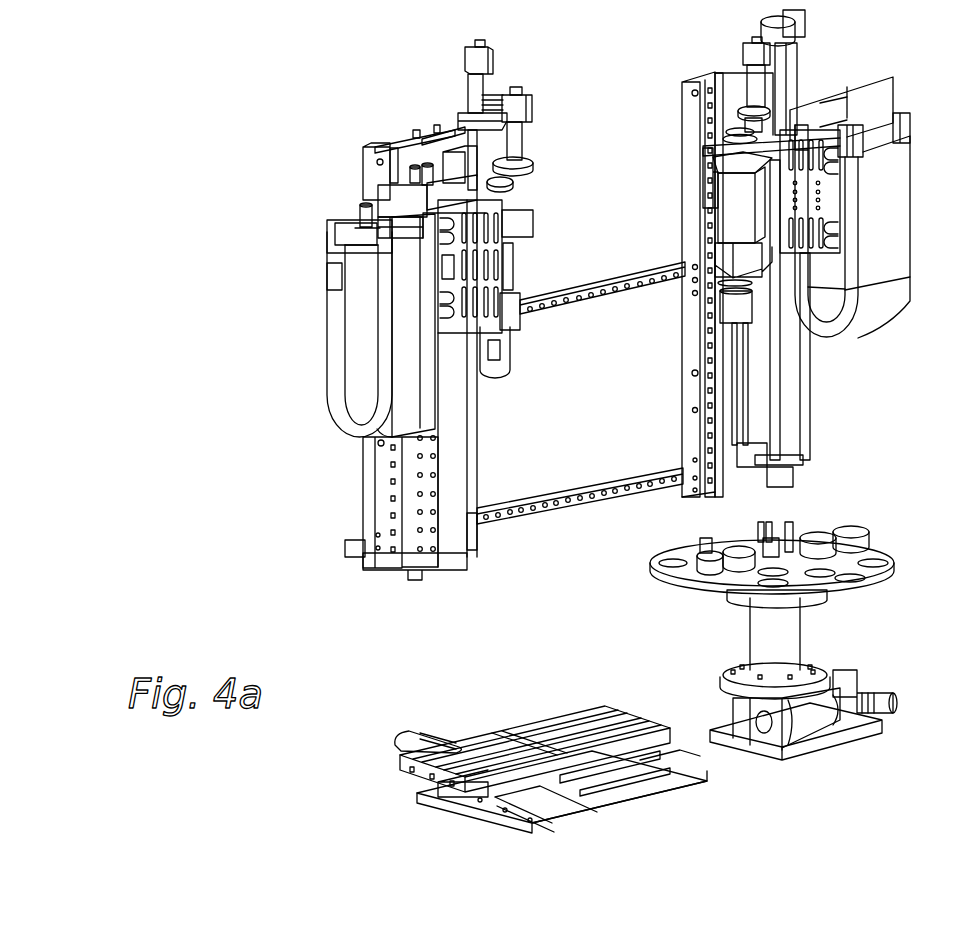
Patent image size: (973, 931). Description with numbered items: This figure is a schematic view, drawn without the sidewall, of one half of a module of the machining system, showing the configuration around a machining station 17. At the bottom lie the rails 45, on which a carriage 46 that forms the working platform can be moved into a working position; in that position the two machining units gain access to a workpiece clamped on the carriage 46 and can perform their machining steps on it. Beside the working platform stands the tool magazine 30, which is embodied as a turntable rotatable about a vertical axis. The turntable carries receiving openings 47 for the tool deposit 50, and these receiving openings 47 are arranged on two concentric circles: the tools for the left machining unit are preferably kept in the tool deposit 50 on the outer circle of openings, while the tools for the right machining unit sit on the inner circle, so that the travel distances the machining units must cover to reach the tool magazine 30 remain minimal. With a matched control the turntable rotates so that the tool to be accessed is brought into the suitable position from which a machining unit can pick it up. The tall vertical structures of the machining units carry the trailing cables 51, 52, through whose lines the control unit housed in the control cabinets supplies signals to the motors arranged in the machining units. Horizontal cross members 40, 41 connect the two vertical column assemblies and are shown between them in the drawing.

The machining station 17 is at (557, 767).
The tool magazine 30 is at (874, 549).
The upper cross beam 40 is at (596, 283).
The lower cross beam 41 is at (588, 492).
The rails 45 is at (680, 771).
The carriage 46 is at (604, 718).
The receiving openings 47 is at (874, 576).
The tool deposit 50 is at (860, 529).
The trailing cable 51 is at (897, 192).
The trailing cable 52 is at (355, 322).